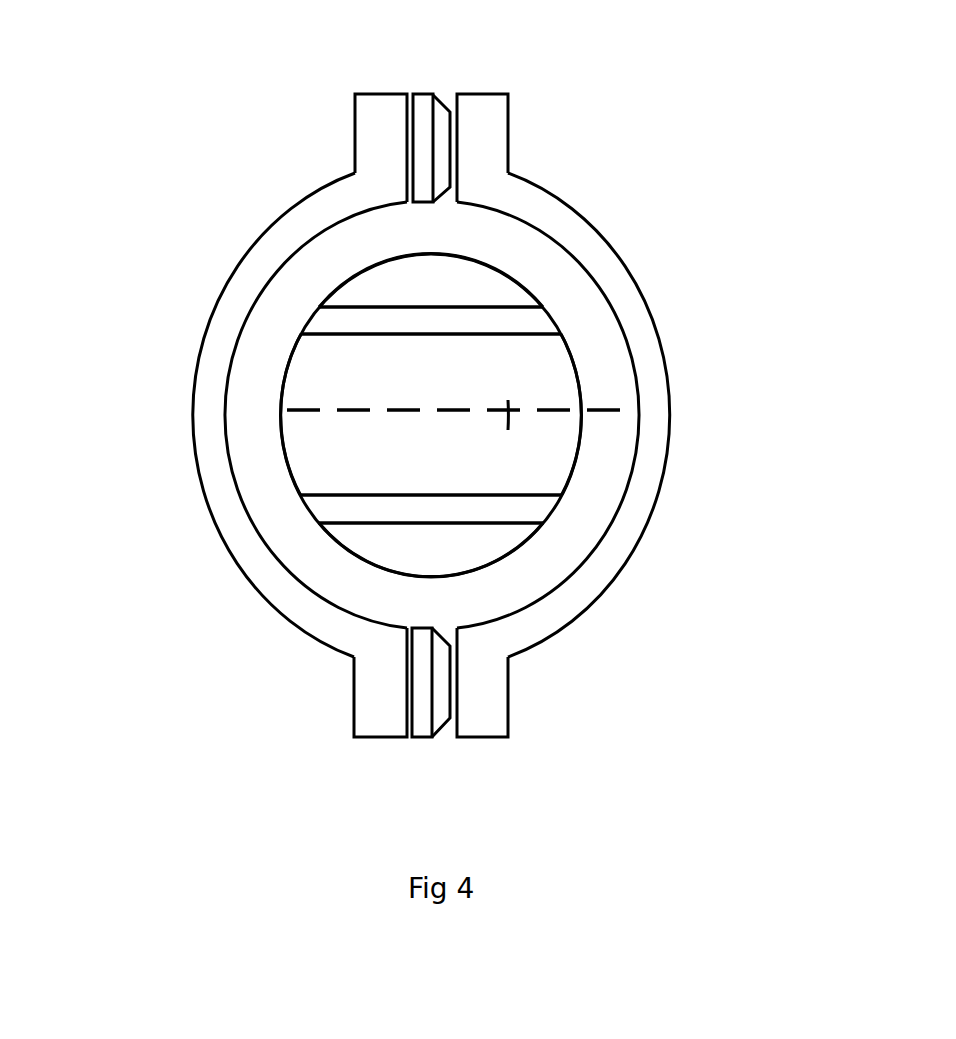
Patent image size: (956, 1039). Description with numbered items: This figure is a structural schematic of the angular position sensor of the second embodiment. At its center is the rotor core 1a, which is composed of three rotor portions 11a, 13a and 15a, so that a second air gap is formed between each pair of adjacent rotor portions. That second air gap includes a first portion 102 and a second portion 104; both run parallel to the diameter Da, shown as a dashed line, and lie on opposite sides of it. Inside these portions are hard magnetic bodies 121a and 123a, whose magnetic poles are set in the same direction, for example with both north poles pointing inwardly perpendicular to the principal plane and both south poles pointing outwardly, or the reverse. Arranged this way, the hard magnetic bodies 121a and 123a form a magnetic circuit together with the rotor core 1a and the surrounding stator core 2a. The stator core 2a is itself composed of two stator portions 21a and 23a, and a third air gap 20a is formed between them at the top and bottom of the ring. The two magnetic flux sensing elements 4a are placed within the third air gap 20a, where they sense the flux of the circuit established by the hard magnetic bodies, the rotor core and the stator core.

The rotor core 1a is at (592, 320).
The stator core 2a is at (688, 528).
The magnetic flux sensing elements 4a is at (443, 97).
The rotor portion 11a is at (373, 282).
The rotor portion 13a is at (318, 383).
The rotor portion 15a is at (363, 534).
The third air gap 20a is at (468, 82).
The stator portion 21a is at (212, 447).
The stator portion 23a is at (693, 420).
The first portion of the second air gap 102 is at (462, 302).
The second portion of the second air gap 104 is at (490, 522).
The hard magnetic body 121a is at (521, 318).
The hard magnetic body 123a is at (543, 507).
The diameter Da is at (575, 413).